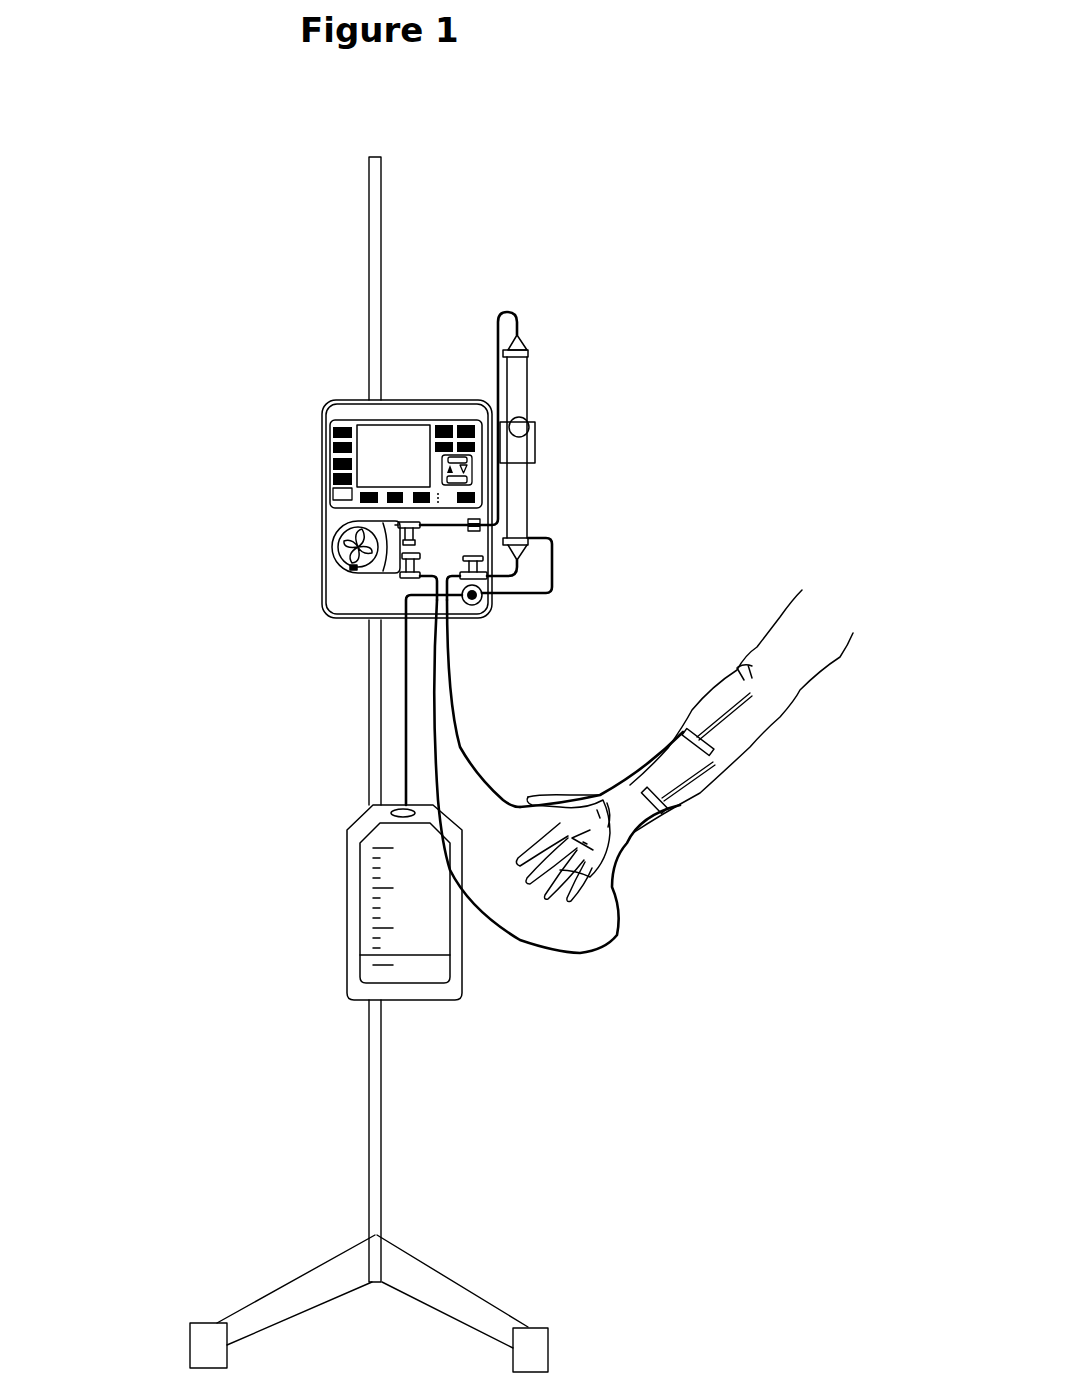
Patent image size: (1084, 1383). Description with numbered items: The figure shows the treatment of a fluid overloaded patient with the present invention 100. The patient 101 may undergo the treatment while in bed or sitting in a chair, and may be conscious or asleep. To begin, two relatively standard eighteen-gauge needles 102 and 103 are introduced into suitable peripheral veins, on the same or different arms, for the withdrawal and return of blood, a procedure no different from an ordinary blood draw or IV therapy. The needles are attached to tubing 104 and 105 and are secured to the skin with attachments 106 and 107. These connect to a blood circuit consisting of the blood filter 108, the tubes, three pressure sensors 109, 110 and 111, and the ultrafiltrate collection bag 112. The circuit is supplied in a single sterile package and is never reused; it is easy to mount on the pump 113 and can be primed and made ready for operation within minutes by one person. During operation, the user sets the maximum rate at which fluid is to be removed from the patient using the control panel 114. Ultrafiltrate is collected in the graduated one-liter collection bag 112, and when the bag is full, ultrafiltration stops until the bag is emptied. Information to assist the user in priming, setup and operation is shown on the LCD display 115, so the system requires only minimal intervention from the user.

The present invention 100 is at (295, 378).
The patient 101 is at (888, 577).
The needle 102 is at (730, 700).
The needle 103 is at (690, 783).
The tubing 104 is at (480, 790).
The tubing 105 is at (620, 945).
The attachment 106 is at (662, 813).
The attachment 107 is at (680, 730).
The blood filter 108 is at (528, 388).
The pressure sensor 109 is at (477, 567).
The pressure sensor 110 is at (403, 572).
The pressure sensor 111 is at (400, 538).
The ultrafiltrate collection bag 112 is at (380, 887).
The pump 113 is at (337, 549).
The control panel 114 is at (335, 480).
The LCD display 115 is at (390, 465).